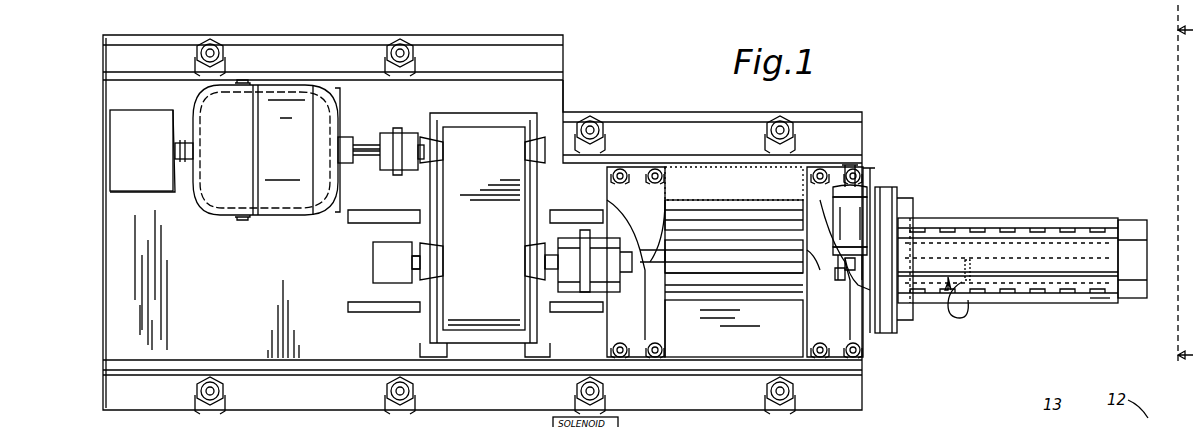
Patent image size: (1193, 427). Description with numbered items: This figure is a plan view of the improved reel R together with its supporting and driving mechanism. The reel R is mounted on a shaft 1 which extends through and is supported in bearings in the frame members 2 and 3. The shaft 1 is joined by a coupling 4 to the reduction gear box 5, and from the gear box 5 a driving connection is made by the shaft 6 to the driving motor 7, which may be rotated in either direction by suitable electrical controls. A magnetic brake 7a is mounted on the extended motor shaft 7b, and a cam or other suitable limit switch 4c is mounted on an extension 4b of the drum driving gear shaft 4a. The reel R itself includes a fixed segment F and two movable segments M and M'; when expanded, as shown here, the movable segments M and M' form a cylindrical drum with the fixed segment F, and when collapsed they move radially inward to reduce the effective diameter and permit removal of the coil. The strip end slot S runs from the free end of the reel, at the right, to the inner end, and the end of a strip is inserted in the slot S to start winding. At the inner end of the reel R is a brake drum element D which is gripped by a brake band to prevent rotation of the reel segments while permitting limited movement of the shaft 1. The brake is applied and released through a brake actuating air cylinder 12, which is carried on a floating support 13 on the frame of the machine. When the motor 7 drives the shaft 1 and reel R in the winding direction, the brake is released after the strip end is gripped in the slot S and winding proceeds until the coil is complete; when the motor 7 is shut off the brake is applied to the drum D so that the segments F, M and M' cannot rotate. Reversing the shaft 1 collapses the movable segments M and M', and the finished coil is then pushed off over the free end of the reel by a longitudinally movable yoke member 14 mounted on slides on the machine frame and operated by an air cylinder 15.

The shaft 1 is at (783, 258).
The frame member 2 is at (850, 333).
The frame member 3 is at (645, 328).
The coupling 4 is at (573, 276).
The drum driving gear shaft 4a is at (550, 264).
The extension 4b is at (418, 272).
The limit switch 4c is at (393, 265).
The reduction gear box 5 is at (478, 148).
The shaft 6 is at (365, 148).
The driving motor 7 is at (285, 168).
The magnetic brake 7a is at (141, 143).
The motor shaft 7b is at (180, 162).
The brake actuating air cylinder 12 is at (866, 230).
The floating support 13 is at (855, 262).
The yoke member 14 is at (905, 205).
The air cylinder 15 is at (723, 280).
The brake drum element D is at (900, 330).
The movable segment M is at (1022, 242).
The movable segment M' is at (1100, 320).
The reel R is at (960, 220).
The strip end slot S is at (1108, 272).
The fixed segment F is at (1044, 244).